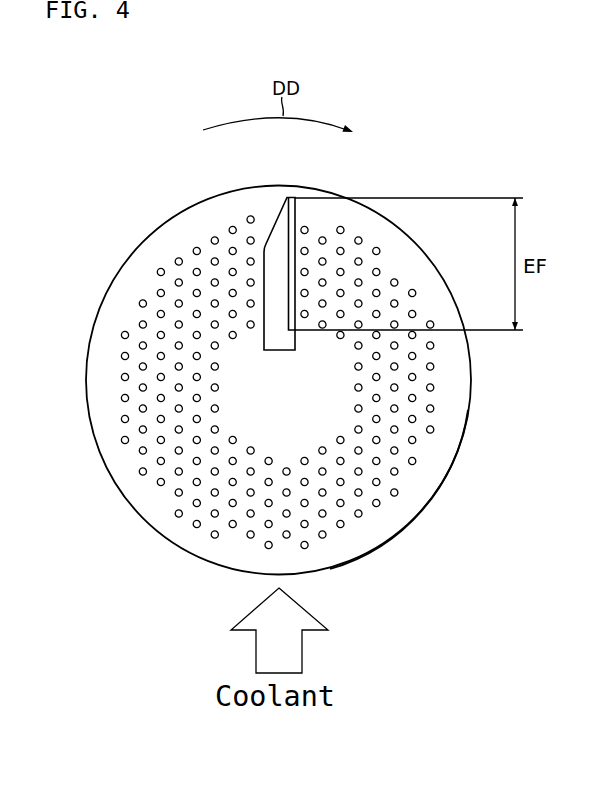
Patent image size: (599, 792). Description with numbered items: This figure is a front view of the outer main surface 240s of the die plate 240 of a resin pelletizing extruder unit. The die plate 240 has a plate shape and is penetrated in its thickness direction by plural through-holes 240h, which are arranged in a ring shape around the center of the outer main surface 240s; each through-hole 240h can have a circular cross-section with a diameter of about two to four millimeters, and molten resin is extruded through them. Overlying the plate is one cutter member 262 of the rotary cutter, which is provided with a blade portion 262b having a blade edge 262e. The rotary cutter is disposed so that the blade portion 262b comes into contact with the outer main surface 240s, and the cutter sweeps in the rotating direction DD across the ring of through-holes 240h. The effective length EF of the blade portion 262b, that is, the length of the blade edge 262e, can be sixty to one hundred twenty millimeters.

The die plate 240 is at (349, 199).
The through-holes 240h is at (362, 238).
The outer main surface 240s is at (437, 474).
The cutter member 262 is at (266, 245).
The blade portion 262b is at (290, 262).
The blade edge 262e is at (296, 242).